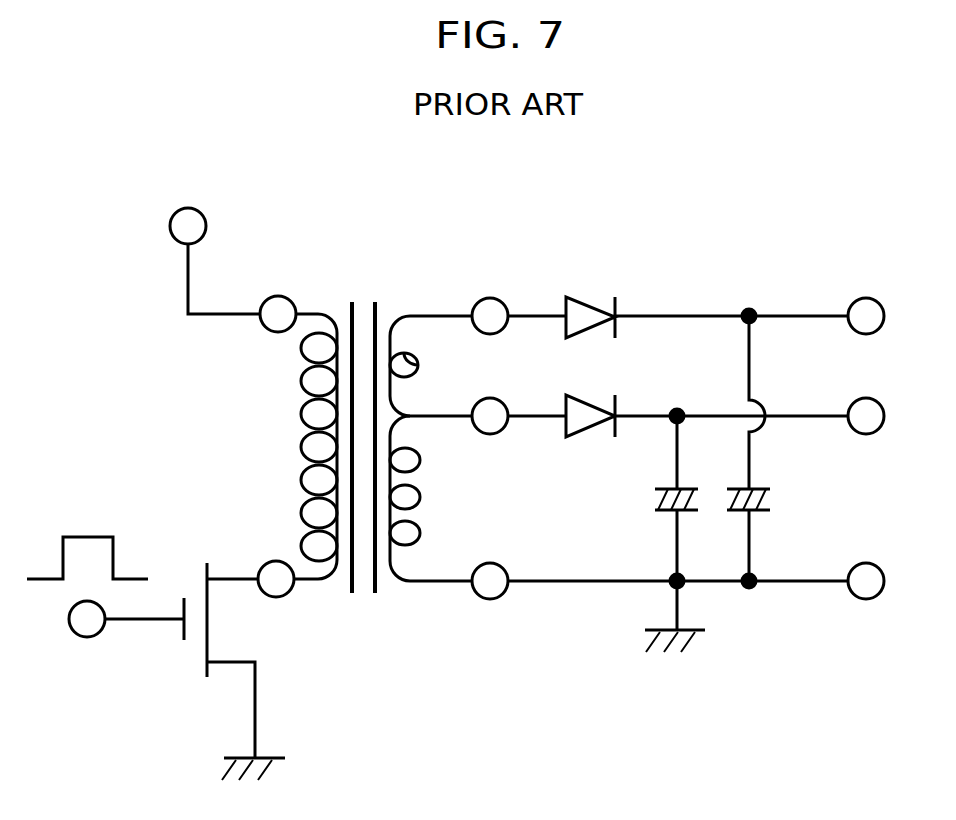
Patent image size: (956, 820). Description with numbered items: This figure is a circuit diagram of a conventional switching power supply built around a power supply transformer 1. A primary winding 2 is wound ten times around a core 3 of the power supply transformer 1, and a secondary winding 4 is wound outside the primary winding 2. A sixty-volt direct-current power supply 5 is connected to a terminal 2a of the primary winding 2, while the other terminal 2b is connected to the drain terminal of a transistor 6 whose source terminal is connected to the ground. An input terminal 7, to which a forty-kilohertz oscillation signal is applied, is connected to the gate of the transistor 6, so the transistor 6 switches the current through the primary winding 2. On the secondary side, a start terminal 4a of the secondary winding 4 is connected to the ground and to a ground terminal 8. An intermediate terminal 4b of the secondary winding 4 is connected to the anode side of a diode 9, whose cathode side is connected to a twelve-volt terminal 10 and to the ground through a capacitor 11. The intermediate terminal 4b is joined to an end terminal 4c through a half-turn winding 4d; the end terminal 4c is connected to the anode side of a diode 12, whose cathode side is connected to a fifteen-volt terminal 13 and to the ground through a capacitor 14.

The power supply transformer 1 is at (352, 298).
The primary winding 2 is at (300, 382).
The terminal 2a is at (283, 297).
The other terminal 2b is at (284, 596).
The core 3 is at (377, 298).
The secondary winding 4 is at (422, 497).
The start terminal 4a is at (490, 599).
The intermediate terminal 4b is at (490, 434).
The end terminal 4c is at (491, 298).
The 0.5-turn winding 4d is at (420, 363).
The direct-current power supply 5 is at (170, 228).
The transistor 6 is at (193, 568).
The input terminal 7 is at (87, 637).
The ground terminal 8 is at (866, 601).
The diode 9 is at (583, 438).
The 12V terminal 10 is at (866, 435).
The capacitor 11 is at (655, 495).
The diode 12 is at (575, 292).
The 15V terminal 13 is at (866, 298).
The capacitor 14 is at (772, 503).